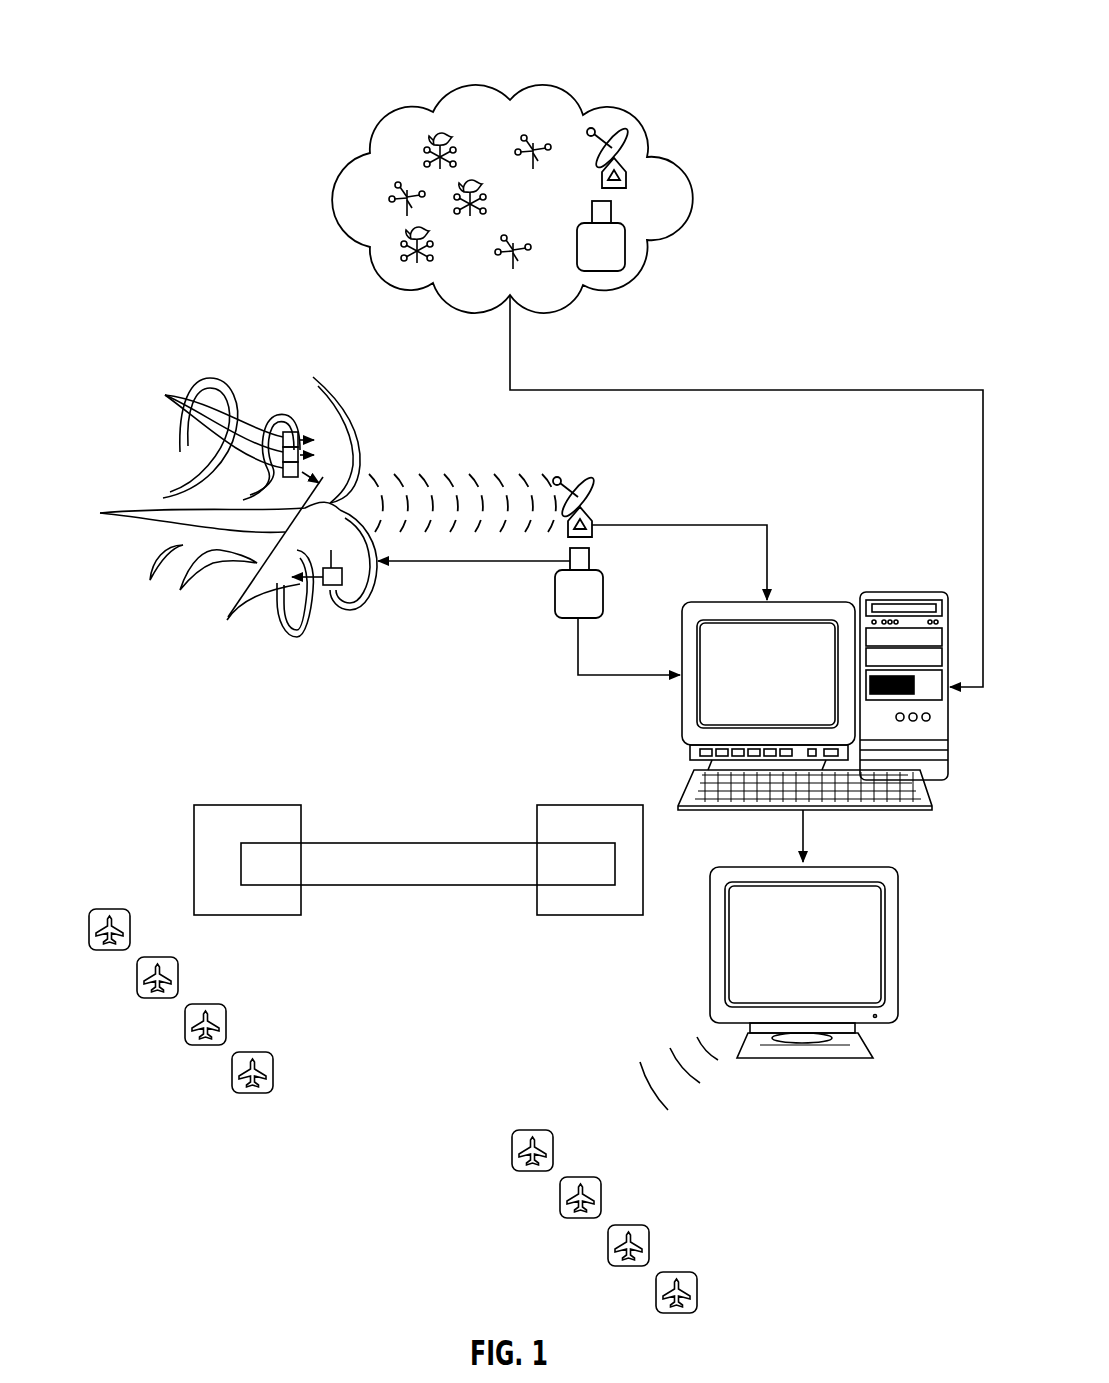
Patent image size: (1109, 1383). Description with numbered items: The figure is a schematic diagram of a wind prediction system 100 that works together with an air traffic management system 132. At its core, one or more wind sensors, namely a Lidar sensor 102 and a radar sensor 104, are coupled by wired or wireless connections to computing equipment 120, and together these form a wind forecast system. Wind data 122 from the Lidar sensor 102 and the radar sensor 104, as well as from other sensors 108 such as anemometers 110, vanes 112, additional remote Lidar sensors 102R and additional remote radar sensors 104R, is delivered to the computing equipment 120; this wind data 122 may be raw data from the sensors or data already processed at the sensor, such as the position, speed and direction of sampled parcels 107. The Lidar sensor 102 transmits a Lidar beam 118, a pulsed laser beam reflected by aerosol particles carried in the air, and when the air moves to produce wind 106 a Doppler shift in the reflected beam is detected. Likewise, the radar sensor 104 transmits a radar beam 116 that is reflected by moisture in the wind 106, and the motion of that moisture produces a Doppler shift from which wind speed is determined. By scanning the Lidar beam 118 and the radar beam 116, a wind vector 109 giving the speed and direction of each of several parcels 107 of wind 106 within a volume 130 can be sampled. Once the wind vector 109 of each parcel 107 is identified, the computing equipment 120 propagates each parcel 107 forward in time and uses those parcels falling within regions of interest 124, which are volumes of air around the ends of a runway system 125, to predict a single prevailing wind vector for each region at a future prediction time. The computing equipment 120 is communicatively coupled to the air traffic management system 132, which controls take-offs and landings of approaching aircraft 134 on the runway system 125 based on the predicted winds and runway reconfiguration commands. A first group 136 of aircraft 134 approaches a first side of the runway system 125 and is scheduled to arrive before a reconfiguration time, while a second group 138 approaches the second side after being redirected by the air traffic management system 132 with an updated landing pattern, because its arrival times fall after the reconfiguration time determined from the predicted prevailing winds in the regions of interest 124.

The wind prediction system 100 is at (655, 24).
The Lidar sensor 102 is at (603, 593).
The remote Lidar sensor 102R is at (627, 233).
The radar sensor 104 is at (590, 473).
The remote radar sensor 104R is at (633, 124).
The wind 106 is at (252, 399).
The parcels of wind 107 is at (357, 623).
The other sensors 108 is at (450, 75).
The wind vector 109 is at (265, 566).
The anemometers 110 is at (542, 146).
The vanes 112 is at (430, 157).
The radar beam 116 is at (412, 456).
The Lidar beam 118 is at (505, 570).
The computing equipment 120 is at (907, 589).
The wind data 122 is at (880, 386).
The regions of interest 124 is at (235, 805).
The runway system 125 is at (408, 886).
The volume 130 is at (205, 217).
The air traffic management system 132 is at (862, 866).
The aircraft 134 is at (412, 1111).
The first group of aircraft 136 is at (146, 1029).
The second group of aircraft 138 is at (576, 1251).